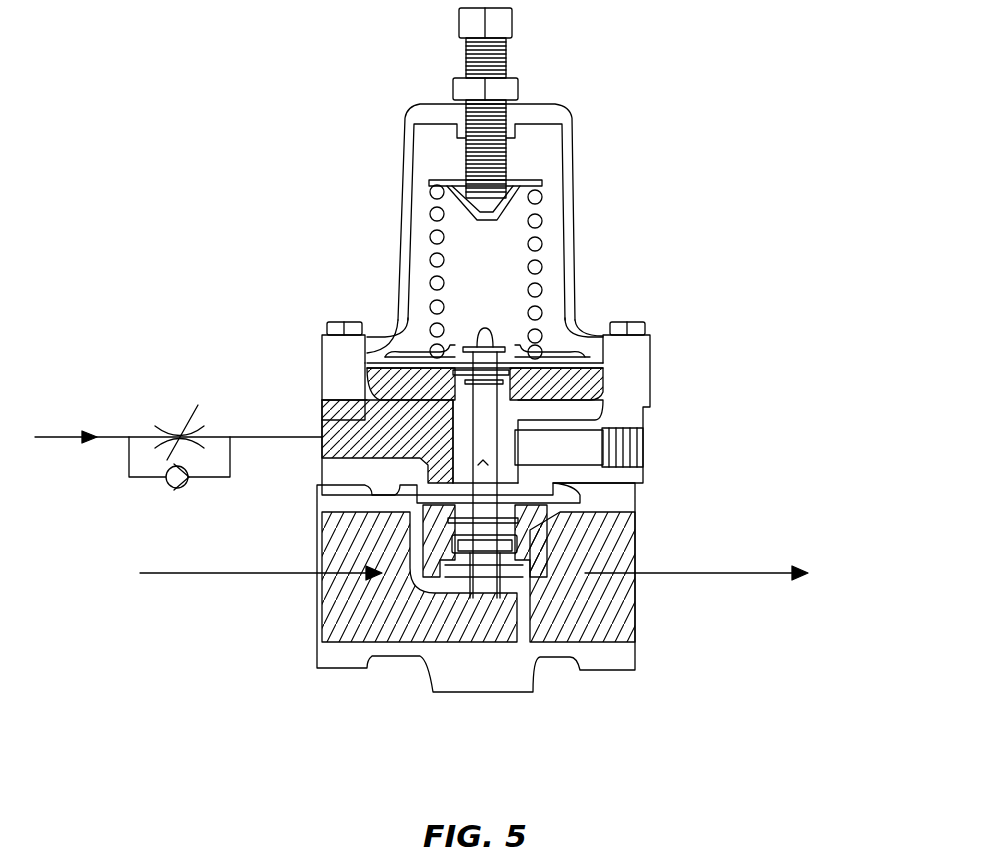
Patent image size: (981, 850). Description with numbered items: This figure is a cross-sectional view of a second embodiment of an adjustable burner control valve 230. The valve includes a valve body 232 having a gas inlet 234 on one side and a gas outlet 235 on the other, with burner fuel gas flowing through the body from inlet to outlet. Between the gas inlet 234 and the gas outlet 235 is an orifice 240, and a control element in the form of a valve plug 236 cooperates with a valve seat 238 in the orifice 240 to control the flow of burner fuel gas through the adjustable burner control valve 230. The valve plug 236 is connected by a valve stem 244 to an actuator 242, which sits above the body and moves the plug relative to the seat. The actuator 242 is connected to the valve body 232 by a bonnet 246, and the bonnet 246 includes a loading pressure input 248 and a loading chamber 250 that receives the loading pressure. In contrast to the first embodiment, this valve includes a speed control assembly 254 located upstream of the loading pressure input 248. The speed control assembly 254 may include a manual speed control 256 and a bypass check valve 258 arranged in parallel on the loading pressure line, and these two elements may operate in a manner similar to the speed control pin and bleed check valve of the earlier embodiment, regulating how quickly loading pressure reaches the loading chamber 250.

The adjustable burner control valve 230 is at (285, 132).
The valve body 232 is at (370, 668).
The gas inlet 234 is at (322, 622).
The gas outlet 235 is at (605, 633).
The valve plug 236 is at (518, 540).
The valve seat 238 is at (522, 575).
The orifice 240 is at (483, 583).
The actuator 242 is at (565, 112).
The valve stem 244 is at (488, 420).
The bonnet 246 is at (645, 407).
The loading pressure input 248 is at (333, 400).
The loading chamber 250 is at (413, 383).
The speed control assembly 254 is at (120, 388).
The manual speed control 256 is at (178, 432).
The bypass check valve 258 is at (168, 484).